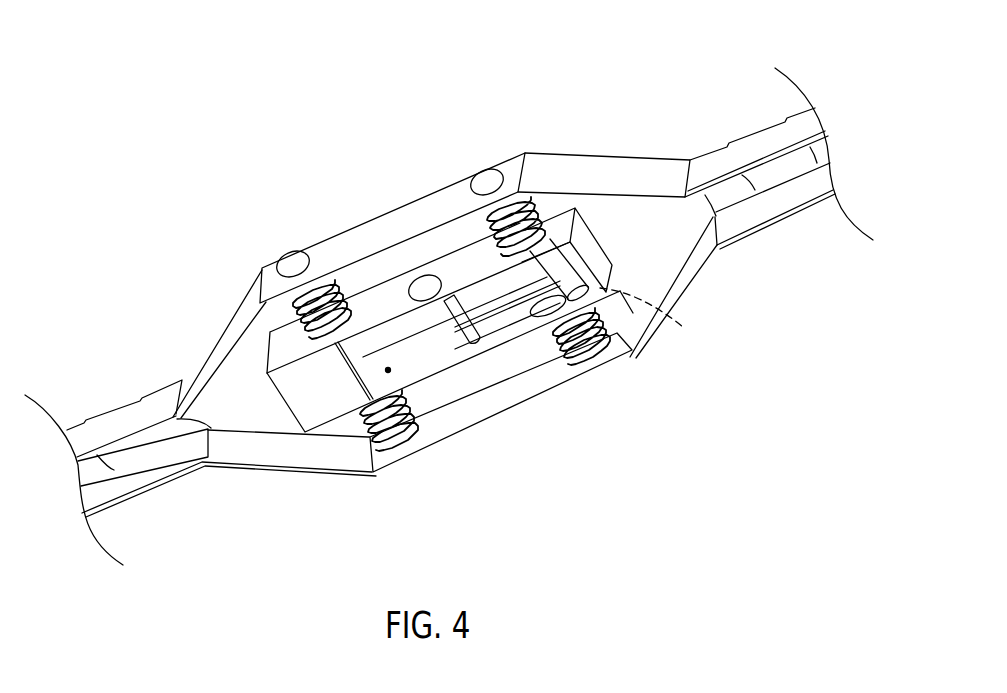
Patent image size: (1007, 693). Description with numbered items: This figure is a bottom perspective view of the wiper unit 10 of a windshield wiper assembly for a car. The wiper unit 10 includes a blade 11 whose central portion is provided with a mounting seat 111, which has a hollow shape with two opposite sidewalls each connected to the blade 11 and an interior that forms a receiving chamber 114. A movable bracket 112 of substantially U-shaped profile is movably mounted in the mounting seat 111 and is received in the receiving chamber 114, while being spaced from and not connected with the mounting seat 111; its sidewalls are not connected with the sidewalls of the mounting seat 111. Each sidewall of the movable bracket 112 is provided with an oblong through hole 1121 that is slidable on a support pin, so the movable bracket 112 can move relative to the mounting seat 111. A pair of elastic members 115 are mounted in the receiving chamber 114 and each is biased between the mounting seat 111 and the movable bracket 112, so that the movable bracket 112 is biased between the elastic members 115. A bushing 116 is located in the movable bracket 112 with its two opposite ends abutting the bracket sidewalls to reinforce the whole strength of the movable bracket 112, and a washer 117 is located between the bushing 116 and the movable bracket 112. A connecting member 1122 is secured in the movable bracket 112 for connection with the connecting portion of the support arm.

The wiper unit 10 is at (655, 133).
The blade 11 is at (122, 425).
The mounting seat 111 is at (213, 345).
The movable bracket 112 is at (233, 325).
The through hole 1121 is at (288, 347).
The connecting member 1122 is at (472, 345).
The receiving chamber 114 is at (438, 247).
The elastic members 115 is at (327, 280).
The bushing 116 is at (556, 196).
The washer 117 is at (583, 283).